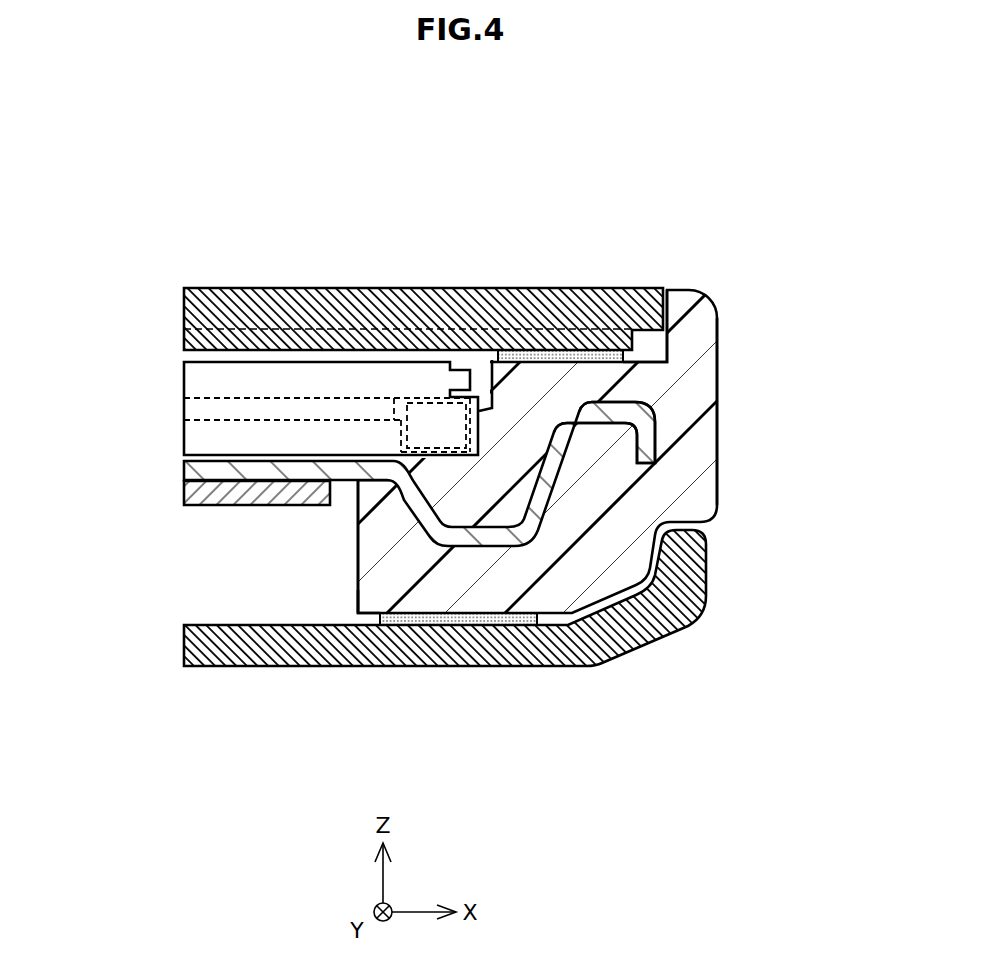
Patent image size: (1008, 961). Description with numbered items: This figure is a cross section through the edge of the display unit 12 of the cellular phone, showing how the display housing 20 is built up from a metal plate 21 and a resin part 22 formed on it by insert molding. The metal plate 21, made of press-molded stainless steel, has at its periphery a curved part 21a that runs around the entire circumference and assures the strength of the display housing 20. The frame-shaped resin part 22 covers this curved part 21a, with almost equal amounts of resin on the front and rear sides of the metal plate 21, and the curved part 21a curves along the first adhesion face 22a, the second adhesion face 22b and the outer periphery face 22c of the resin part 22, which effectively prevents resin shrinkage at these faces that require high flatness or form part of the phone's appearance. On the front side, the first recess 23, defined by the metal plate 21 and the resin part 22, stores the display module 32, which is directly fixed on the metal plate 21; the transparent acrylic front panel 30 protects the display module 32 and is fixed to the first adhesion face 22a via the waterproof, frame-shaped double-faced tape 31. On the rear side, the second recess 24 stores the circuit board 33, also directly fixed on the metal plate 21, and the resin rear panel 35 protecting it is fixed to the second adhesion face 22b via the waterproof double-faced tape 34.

The display unit 12 is at (497, 427).
The display housing 20 is at (537, 449).
The metal plate 21 is at (476, 476).
The curved part 21a is at (645, 437).
The resin part 22 is at (580, 453).
The first adhesion face 22a is at (650, 357).
The second adhesion face 22b is at (377, 617).
The outer periphery face 22c is at (718, 385).
The first recess 23 is at (492, 408).
The second recess 24 is at (360, 570).
The front panel 30 is at (398, 300).
The double-faced tape 31 is at (572, 352).
The display module 32 is at (323, 372).
The circuit board 33 is at (200, 492).
The double-faced tape 34 is at (467, 622).
The rear panel 35 is at (310, 652).